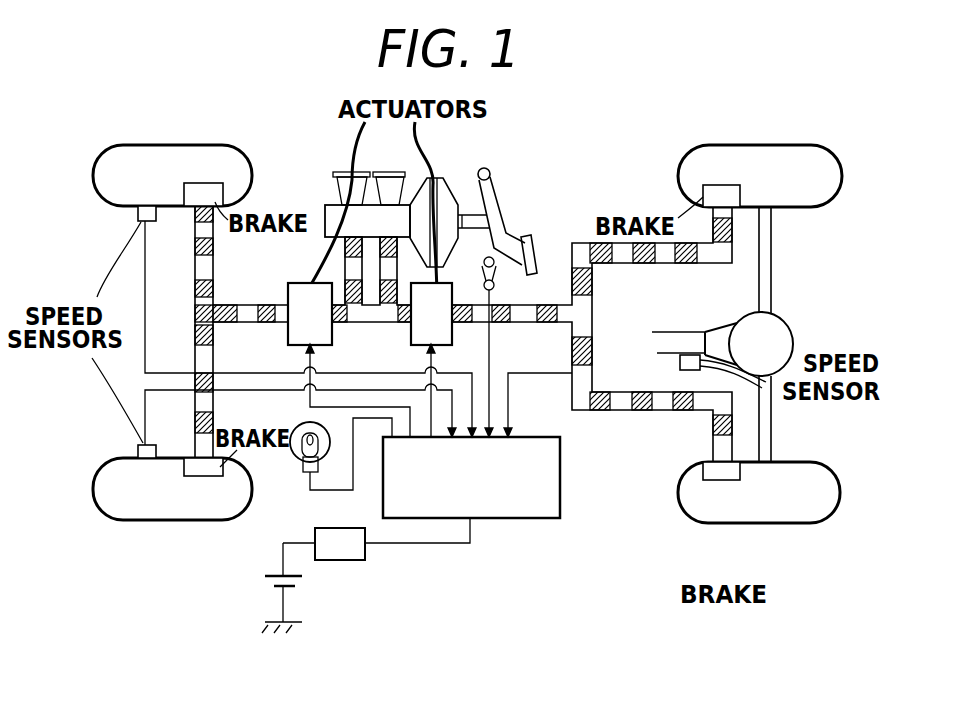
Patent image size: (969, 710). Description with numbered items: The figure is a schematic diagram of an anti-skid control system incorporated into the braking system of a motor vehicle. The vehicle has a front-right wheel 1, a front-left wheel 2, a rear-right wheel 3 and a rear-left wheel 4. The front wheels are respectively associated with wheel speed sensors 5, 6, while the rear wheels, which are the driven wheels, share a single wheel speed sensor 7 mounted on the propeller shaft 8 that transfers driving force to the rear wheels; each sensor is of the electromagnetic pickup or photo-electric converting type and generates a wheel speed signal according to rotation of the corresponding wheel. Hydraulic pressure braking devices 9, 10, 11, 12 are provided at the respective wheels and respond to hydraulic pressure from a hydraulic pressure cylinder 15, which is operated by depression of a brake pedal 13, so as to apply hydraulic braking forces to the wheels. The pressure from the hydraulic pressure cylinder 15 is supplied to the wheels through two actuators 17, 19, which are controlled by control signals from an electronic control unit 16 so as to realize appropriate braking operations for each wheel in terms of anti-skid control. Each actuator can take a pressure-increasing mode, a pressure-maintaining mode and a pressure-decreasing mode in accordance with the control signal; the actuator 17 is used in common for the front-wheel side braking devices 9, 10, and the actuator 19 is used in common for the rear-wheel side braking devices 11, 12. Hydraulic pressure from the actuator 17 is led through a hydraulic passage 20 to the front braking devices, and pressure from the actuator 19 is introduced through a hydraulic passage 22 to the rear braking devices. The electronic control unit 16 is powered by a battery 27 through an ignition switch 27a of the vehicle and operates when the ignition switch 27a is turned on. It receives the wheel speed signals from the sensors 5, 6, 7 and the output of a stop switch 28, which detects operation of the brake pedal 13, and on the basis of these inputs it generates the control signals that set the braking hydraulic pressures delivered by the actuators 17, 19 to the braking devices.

The front-right wheel 1 is at (152, 146).
The front-left wheel 2 is at (145, 521).
The rear-right wheel 3 is at (770, 145).
The rear-left wheel 4 is at (786, 523).
The wheel speed sensor 5 is at (139, 222).
The wheel speed sensor 6 is at (139, 447).
The wheel speed sensor 7 is at (680, 365).
The propeller shaft 8 is at (681, 338).
The hydraulic pressure braking device 9 is at (199, 183).
The hydraulic pressure braking device 10 is at (208, 478).
The hydraulic pressure braking device 11 is at (716, 185).
The hydraulic pressure braking device 12 is at (728, 523).
The brake pedal 13 is at (498, 185).
The hydraulic pressure cylinder 15 is at (328, 205).
The electronic control unit 16 is at (560, 470).
The actuator 17 is at (288, 332).
The actuator 19 is at (411, 332).
The hydraulic passage 20 is at (213, 268).
The hydraulic passage 22 is at (545, 305).
The battery 27 is at (268, 578).
The ignition switch 27a is at (340, 560).
The stop switch 28 is at (485, 258).